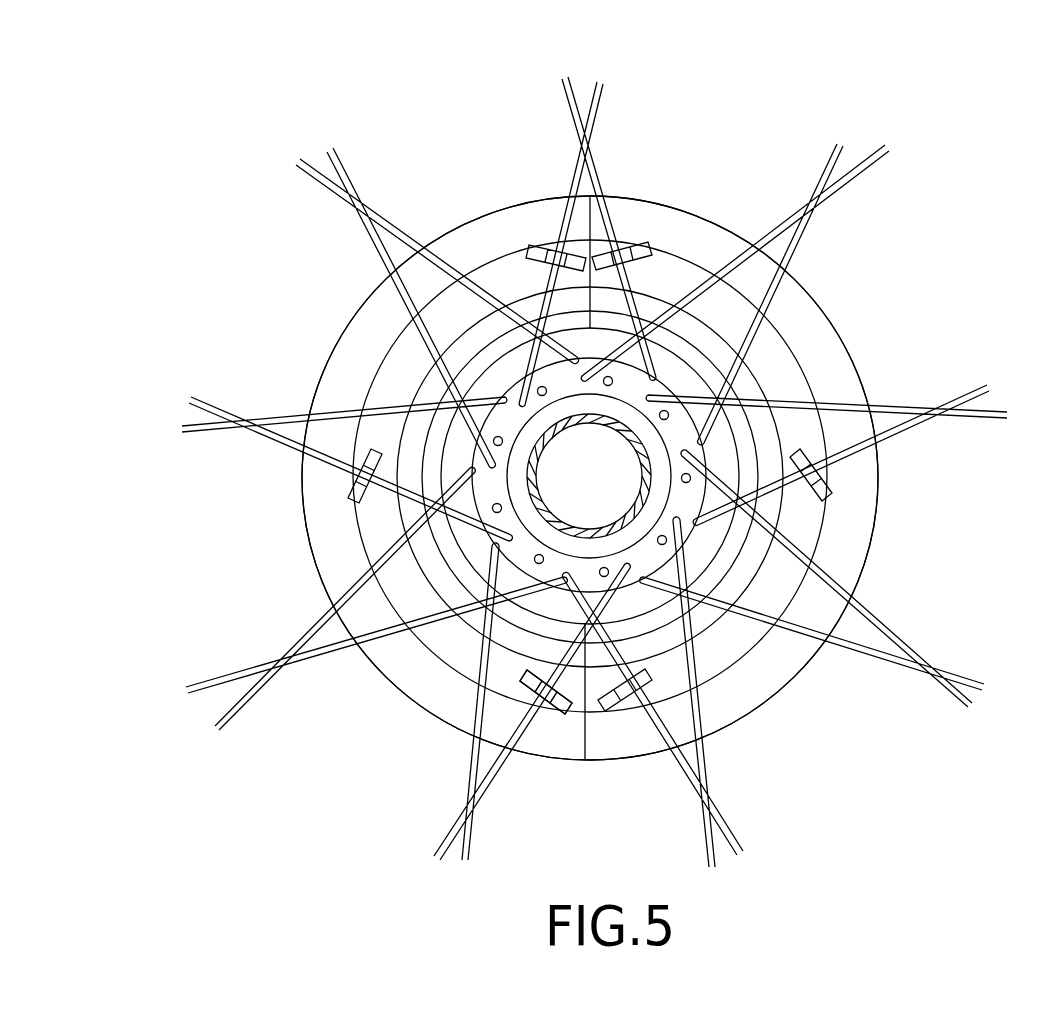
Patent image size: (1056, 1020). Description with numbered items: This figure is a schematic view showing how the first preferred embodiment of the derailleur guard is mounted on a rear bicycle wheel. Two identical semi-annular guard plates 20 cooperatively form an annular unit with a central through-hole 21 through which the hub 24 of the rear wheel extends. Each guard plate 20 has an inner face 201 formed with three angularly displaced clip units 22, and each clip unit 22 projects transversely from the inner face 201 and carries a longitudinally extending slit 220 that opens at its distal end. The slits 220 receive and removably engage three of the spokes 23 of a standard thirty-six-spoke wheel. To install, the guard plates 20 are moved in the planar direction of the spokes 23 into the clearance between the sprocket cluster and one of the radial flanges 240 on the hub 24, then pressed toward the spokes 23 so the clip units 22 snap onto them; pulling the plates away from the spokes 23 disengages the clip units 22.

The guard plate 20 is at (395, 703).
The inner face 201 is at (312, 492).
The central through-hole 21 is at (828, 542).
The clip unit 22 is at (563, 712).
The slit 220 is at (550, 717).
The spoke 23 is at (323, 655).
The hub 24 is at (728, 593).
The radial flange 240 is at (657, 566).